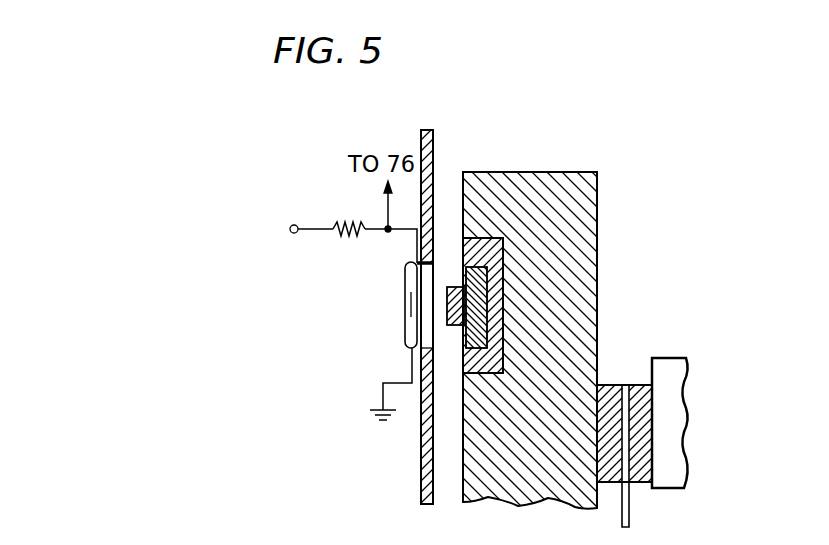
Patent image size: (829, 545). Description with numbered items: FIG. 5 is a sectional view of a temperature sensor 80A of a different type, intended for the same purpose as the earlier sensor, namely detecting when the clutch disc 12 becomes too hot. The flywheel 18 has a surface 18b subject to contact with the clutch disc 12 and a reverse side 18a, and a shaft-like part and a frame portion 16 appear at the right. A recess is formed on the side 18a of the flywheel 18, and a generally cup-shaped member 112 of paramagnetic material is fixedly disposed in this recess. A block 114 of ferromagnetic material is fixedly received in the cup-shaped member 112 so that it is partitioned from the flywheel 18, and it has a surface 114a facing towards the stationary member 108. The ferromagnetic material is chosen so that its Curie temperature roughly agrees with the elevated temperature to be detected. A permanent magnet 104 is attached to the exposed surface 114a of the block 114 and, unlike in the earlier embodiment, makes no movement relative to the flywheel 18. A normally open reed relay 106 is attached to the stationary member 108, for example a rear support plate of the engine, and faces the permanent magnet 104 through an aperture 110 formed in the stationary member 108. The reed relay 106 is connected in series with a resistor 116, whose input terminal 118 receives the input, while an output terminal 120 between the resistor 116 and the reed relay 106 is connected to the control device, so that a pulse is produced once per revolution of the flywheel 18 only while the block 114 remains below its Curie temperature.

The clutch disc 12 is at (602, 384).
The frame member 16 is at (662, 358).
The flywheel 18 is at (555, 172).
The side of the flywheel 18a is at (455, 177).
The surface of the flywheel 18b is at (598, 255).
The temperature sensor 80A is at (448, 182).
The permanent magnet 104 is at (447, 290).
The reed relay 106 is at (405, 297).
The stationary member 108 is at (426, 447).
The aperture 110 is at (428, 331).
The cup-shaped member 112 is at (496, 238).
The block 114 is at (484, 340).
The surface of the block 114a is at (463, 333).
The resistor 116 is at (350, 220).
The input terminal 118 is at (290, 231).
The output terminal 120 is at (388, 234).